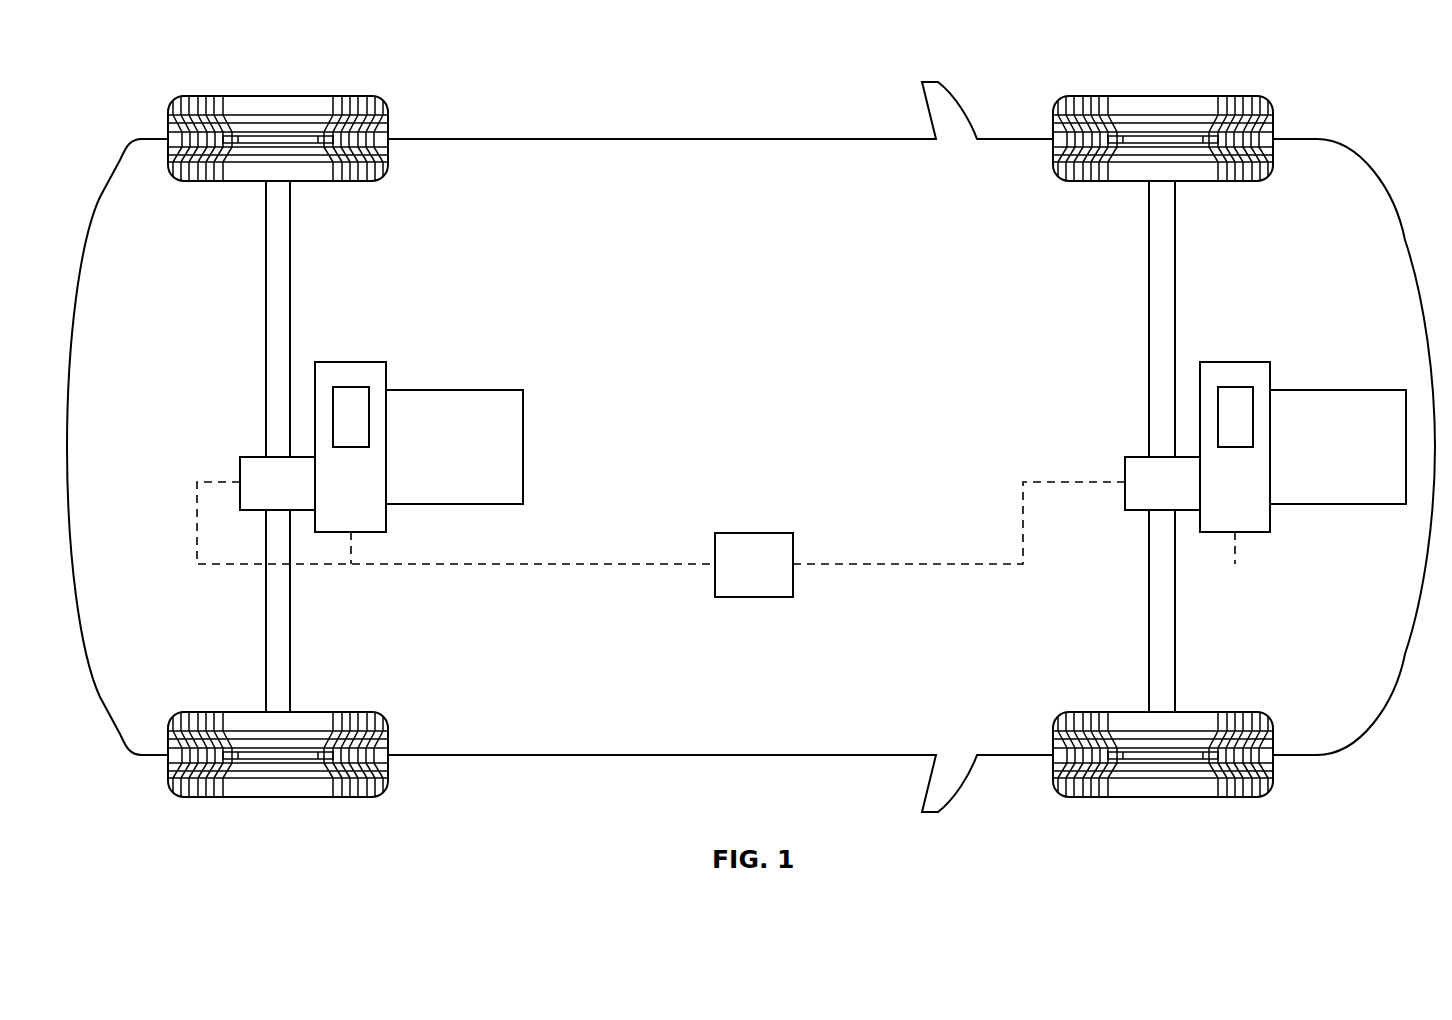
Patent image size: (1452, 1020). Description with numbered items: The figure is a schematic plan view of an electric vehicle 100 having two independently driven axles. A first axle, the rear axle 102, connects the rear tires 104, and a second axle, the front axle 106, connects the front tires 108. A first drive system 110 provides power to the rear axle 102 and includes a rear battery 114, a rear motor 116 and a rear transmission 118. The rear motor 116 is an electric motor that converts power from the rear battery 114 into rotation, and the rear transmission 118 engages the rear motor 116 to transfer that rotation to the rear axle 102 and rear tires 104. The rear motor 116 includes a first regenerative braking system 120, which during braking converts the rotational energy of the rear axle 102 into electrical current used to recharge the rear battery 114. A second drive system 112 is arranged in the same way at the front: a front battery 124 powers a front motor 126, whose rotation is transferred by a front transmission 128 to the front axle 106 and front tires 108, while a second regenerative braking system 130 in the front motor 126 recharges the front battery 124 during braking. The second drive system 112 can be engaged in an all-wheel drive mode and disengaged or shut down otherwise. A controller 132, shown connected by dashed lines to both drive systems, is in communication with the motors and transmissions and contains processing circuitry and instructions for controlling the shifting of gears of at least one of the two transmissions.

The electric vehicle 100 is at (148, 42).
The rear axle 102 is at (266, 245).
The rear tires 104 is at (278, 96).
The front axle 106 is at (1149, 272).
The front tires 108 is at (1163, 96).
The first drive system 110 is at (460, 413).
The second drive system 112 is at (1310, 413).
The rear battery 114 is at (523, 447).
The rear motor 116 is at (364, 413).
The rear transmission 118 is at (251, 457).
The first regenerative braking system 120 is at (360, 387).
The front battery 124 is at (1360, 390).
The front motor 126 is at (1246, 413).
The front transmission 128 is at (1133, 457).
The second regenerative braking system 130 is at (1245, 387).
The controller 132 is at (752, 533).